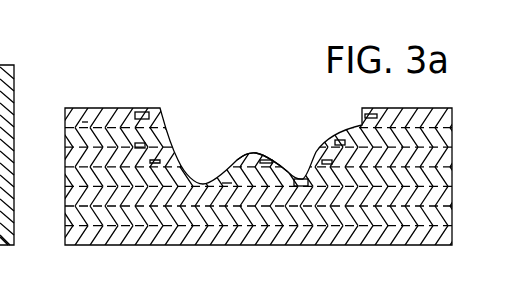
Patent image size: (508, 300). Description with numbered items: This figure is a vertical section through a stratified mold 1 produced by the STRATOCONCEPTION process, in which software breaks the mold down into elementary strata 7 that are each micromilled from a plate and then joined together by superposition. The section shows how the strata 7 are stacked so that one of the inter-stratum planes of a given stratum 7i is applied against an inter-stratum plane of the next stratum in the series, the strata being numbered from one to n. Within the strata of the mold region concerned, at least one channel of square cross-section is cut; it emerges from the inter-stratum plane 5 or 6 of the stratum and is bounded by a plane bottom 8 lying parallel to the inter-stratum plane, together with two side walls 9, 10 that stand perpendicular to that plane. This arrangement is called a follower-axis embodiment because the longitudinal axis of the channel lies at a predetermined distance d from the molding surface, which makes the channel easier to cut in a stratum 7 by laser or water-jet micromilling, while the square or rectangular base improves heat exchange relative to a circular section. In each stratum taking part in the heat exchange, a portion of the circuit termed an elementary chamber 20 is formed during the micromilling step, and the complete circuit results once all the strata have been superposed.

The mold 1 is at (0, 38).
The inter-stratum plane 5 is at (108, 107).
The inter-stratum plane 6 is at (100, 164).
The elementary stratum 7 is at (452, 135).
The stratum 7i is at (64, 144).
The plane bottom 8 is at (144, 112).
The side wall 9 is at (122, 107).
The side wall 10 is at (150, 116).
The elementary chamber 20 is at (250, 153).
The predetermined distance d is at (300, 172).